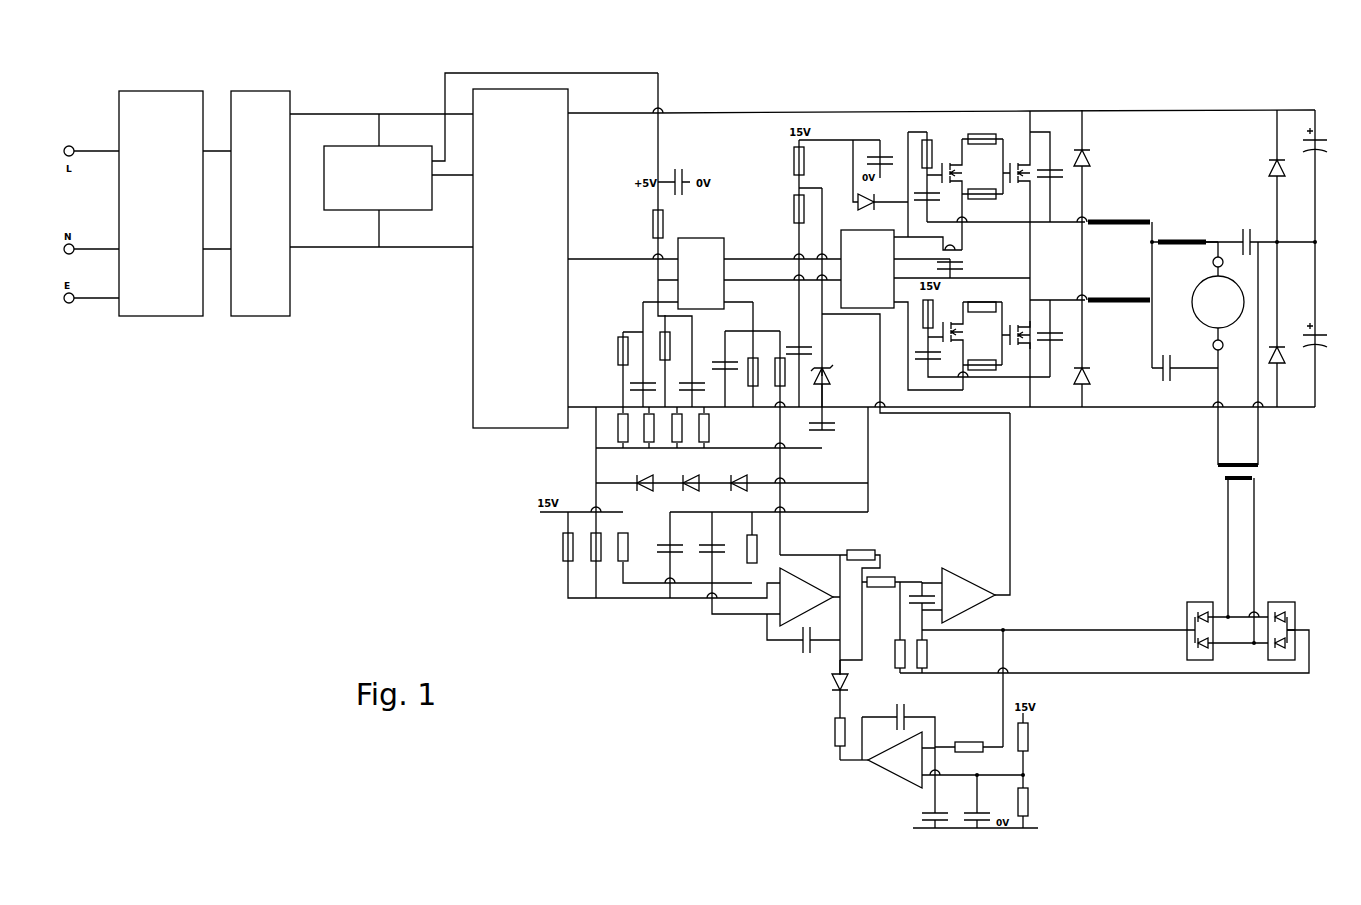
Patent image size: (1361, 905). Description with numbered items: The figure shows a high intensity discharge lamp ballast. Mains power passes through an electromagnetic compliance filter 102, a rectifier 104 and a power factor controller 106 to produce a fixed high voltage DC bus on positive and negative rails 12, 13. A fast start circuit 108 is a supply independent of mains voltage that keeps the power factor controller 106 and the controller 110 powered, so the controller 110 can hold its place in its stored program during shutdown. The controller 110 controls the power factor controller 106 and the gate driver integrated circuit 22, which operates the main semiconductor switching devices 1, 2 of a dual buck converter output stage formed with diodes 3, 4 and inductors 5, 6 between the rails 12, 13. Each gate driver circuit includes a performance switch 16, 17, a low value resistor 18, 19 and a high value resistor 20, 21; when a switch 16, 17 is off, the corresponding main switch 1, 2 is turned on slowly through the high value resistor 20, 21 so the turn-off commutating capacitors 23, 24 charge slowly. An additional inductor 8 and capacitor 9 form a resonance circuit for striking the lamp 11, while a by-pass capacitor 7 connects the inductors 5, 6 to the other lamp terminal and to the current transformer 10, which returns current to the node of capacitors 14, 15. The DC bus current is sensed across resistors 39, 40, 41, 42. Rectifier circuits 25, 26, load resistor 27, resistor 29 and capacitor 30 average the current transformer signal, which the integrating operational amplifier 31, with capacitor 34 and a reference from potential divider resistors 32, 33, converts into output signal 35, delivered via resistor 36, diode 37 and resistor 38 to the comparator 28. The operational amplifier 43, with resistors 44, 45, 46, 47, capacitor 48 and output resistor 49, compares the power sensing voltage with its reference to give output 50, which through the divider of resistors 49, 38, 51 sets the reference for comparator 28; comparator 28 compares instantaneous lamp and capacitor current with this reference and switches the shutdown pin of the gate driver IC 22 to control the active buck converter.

The semiconductor switching device 1 is at (1020, 164).
The semiconductor switching device 2 is at (1020, 326).
The diode 3 is at (1088, 148).
The diode 4 is at (1086, 366).
The inductor 5 is at (1119, 210).
The inductor 6 is at (1119, 288).
The by-pass capacitor 7 is at (1173, 364).
The inductor 8 is at (1182, 231).
The capacitor 9 is at (1253, 237).
The current transformer 10 is at (1250, 554).
The lamp 11 is at (1206, 303).
The positive DC bus rail 12 is at (1114, 110).
The negative DC bus rail 13 is at (1123, 408).
The capacitor 14 is at (1323, 148).
The capacitor 15 is at (1323, 327).
The switch 16 is at (963, 173).
The switch 17 is at (964, 332).
The low value resistor 18 is at (982, 129).
The low value resistor 19 is at (982, 297).
The high value resistor 20 is at (982, 203).
The high value resistor 21 is at (982, 356).
The gate driver integrated circuit 22 is at (867, 269).
The turn OFF current commutating capacitor 23 is at (1057, 182).
The turn OFF current commutating capacitor 24 is at (1057, 326).
The rectifier circuit 25 is at (1281, 621).
The rectifier circuit 26 is at (1200, 621).
The current transformer load resistor 27 is at (935, 654).
The comparator 28 is at (968, 595).
The resistor 29 is at (969, 738).
The capacitor 30 is at (941, 811).
The operational amplifier 31 is at (895, 760).
The potential divider resistor 32 is at (1035, 737).
The potential divider resistor 33 is at (1035, 802).
The capacitor 34 is at (912, 714).
The output signal 35 is at (866, 760).
The resistor 36 is at (828, 739).
The diode 37 is at (852, 689).
The resistor 38 is at (881, 593).
The power sensing resistor 39 is at (623, 439).
The power sensing resistor 40 is at (649, 439).
The power sensing resistor 41 is at (677, 439).
The power sensing resistor 42 is at (704, 439).
The operational amplifier 43 is at (806, 597).
The resistor 44 is at (557, 547).
The resistor 45 is at (586, 557).
The resistor 46 is at (631, 557).
The resistor 47 is at (744, 540).
The capacitor 48 is at (794, 643).
The output resistor 49 is at (861, 548).
The output 50 is at (830, 552).
The resistor 51 is at (890, 654).
The electromagnetic compliance filter 102 is at (161, 203).
The rectifier 104 is at (260, 203).
The power factor controller 106 is at (520, 258).
The fast start circuit 108 is at (375, 192).
The controller 110 is at (701, 259).